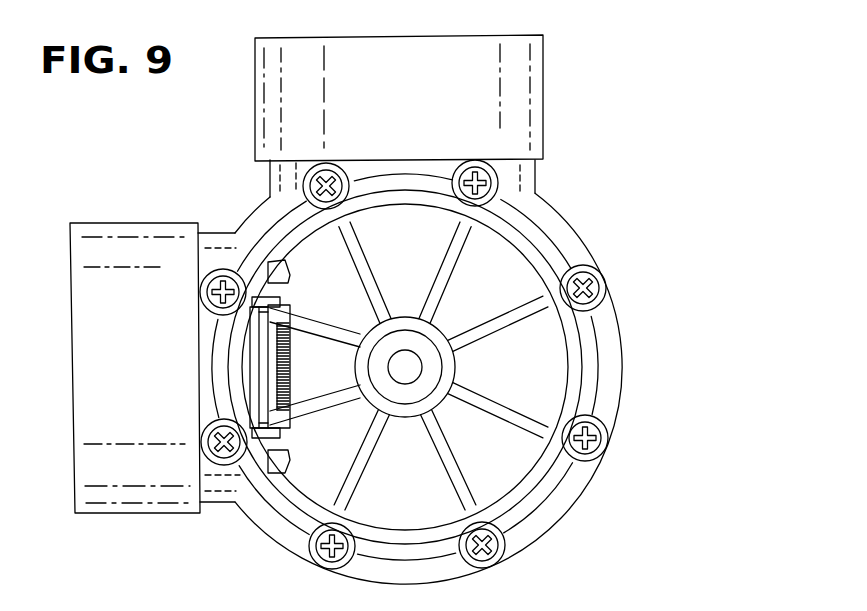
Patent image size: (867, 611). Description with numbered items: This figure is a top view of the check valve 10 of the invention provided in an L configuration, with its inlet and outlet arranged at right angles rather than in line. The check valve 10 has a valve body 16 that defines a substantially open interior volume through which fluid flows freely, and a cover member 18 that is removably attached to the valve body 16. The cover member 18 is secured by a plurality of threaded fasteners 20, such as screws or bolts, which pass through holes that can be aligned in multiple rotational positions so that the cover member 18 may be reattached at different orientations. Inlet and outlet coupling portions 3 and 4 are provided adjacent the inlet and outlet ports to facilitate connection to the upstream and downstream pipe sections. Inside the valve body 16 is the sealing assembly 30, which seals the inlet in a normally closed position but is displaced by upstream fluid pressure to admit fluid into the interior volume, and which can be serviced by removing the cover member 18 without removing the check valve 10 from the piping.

The inlet coupling portion 3 is at (127, 224).
The outlet coupling portion 4 is at (527, 95).
The check valve 10 is at (176, 156).
The valve body 16 is at (565, 495).
The cover member 18 is at (538, 363).
The threaded fasteners 20 is at (487, 548).
The sealing assembly 30 is at (267, 375).